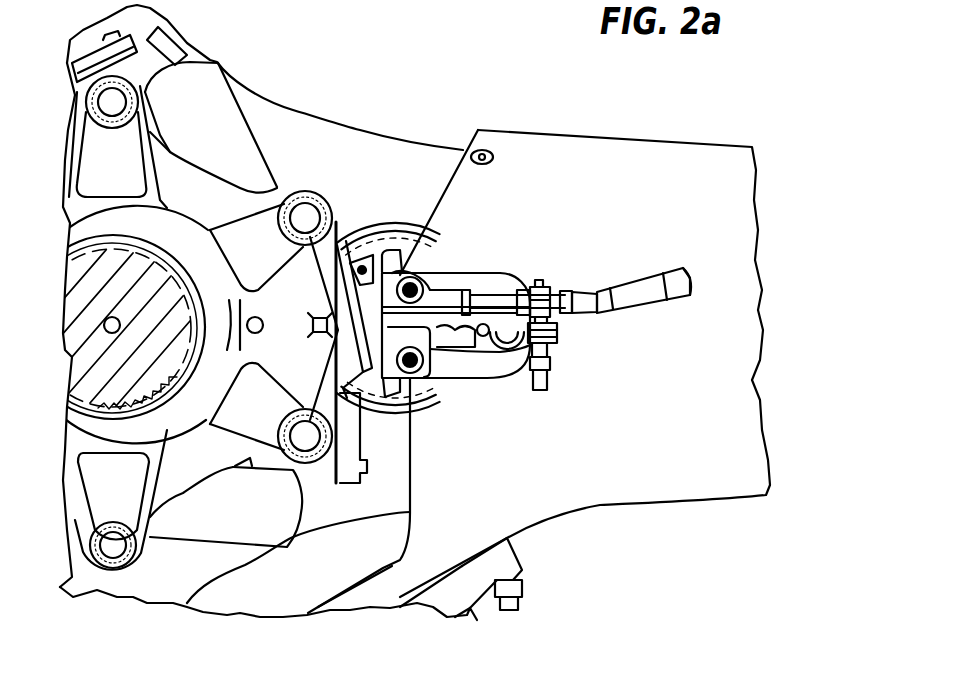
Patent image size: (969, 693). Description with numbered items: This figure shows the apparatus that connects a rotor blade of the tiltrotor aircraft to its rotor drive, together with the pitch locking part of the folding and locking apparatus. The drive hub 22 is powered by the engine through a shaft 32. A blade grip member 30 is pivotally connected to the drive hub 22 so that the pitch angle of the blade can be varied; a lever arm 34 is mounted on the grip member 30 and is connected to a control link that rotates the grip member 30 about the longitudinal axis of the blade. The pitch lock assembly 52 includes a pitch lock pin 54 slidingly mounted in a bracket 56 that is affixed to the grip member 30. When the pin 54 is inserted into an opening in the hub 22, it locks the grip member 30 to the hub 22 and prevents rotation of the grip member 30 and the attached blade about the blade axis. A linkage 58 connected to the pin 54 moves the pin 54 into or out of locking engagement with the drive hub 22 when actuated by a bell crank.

The drive hub 22 is at (266, 94).
The blade grip member 30 is at (542, 133).
The shaft 32 is at (129, 304).
The lever arm 34 is at (470, 615).
The pitch lock assembly 52 is at (590, 284).
The pitch lock pin 54 is at (488, 292).
The bracket 56 is at (438, 273).
The linkage 58 is at (638, 280).